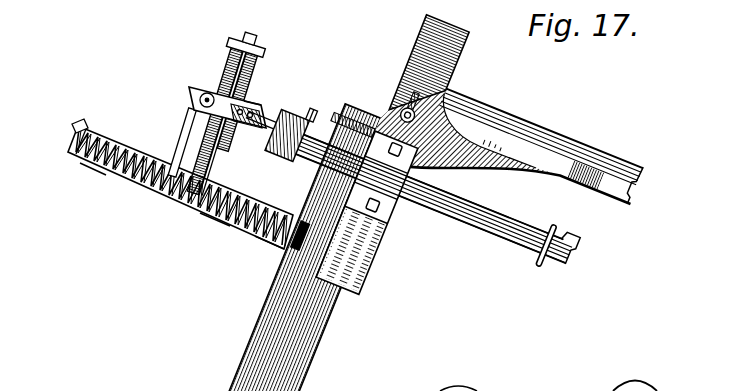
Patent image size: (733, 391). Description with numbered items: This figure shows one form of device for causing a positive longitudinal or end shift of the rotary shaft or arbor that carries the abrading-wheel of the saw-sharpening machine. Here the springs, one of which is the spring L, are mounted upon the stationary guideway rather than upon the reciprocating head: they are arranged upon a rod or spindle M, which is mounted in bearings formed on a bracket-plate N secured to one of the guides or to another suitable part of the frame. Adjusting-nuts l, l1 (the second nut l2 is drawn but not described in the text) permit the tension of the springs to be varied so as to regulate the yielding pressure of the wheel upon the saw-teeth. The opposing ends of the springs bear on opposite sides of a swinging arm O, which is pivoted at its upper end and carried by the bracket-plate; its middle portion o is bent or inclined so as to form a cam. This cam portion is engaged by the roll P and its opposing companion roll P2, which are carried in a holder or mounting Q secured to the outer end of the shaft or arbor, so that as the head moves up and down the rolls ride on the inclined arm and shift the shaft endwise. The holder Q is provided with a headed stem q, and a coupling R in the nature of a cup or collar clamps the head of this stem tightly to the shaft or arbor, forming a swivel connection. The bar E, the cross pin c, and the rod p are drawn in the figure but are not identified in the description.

The bracket-plate N is at (127, 148).
The spring L is at (138, 178).
The rod or spindle M is at (70, 136).
The adjusting-nut l is at (93, 170).
The adjusting-nut l1 is at (215, 216).
The casing bar end l2 is at (262, 238).
The swinging arm O is at (238, 93).
The holder or mounting Q is at (192, 97).
The roll P is at (207, 83).
The middle portion o is at (228, 129).
The pivot P2 is at (254, 98).
The bar E is at (497, 220).
The cross pin c is at (562, 238).
The connecting rod p is at (250, 117).
The coupling R is at (284, 118).
The headed stem q is at (280, 130).